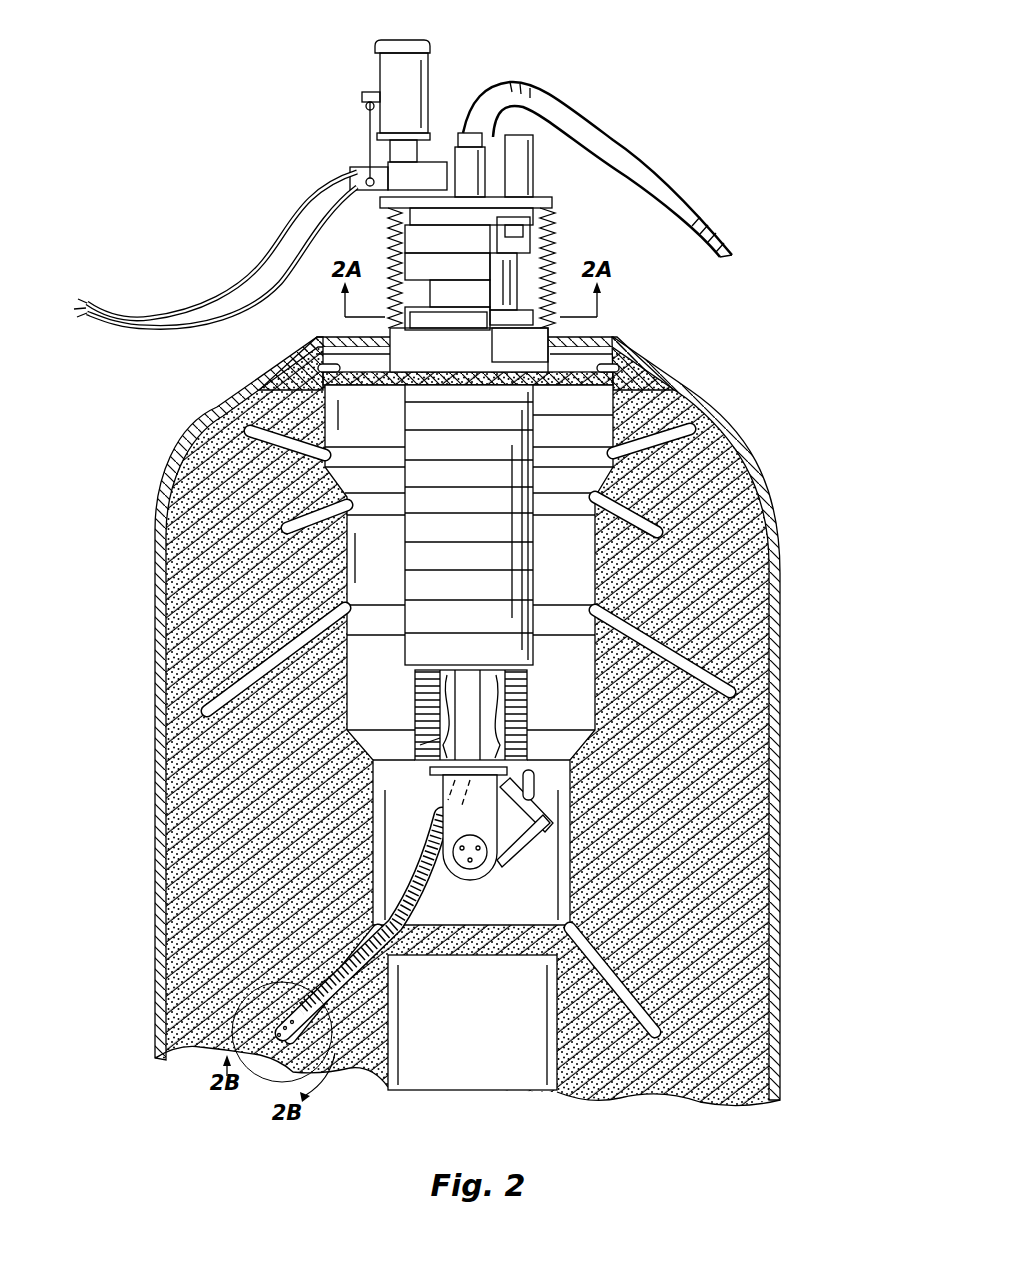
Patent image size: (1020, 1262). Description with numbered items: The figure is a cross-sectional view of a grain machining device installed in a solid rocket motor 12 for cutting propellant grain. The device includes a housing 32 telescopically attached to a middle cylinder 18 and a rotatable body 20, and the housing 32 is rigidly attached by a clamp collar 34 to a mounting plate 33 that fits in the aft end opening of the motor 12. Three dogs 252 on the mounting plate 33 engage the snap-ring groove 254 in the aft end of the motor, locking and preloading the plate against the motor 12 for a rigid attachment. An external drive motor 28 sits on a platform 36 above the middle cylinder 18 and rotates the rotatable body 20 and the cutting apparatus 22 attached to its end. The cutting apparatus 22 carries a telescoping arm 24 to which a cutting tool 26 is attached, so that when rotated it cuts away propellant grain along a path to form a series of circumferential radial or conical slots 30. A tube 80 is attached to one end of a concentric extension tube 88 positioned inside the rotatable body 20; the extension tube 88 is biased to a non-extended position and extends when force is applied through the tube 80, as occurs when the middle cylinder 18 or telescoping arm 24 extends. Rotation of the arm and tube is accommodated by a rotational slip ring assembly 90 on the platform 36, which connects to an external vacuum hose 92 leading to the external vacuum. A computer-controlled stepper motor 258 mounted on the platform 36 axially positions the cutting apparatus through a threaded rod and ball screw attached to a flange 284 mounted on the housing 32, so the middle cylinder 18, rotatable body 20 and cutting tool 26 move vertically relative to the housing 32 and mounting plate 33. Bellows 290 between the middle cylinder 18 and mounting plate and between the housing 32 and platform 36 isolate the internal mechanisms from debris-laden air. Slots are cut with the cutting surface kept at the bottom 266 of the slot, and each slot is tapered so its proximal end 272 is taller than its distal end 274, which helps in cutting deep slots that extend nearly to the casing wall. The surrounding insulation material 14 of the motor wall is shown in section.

The solid rocket motor 12 is at (780, 505).
The insulating wall 14 is at (182, 805).
The middle cylinder 18 is at (505, 713).
The rotatable body 20 is at (535, 792).
The cutting apparatus 22 is at (482, 887).
The telescoping arm 24 is at (308, 1005).
The cutting tool 26 is at (272, 1032).
The external drive motor 28 is at (410, 41).
The radial slots 30 is at (692, 436).
The housing 32 is at (480, 558).
The mounting plate 33 is at (568, 378).
The clamp collar 34 is at (540, 330).
The platform 36 is at (535, 200).
The tube 80 is at (403, 943).
The concentric extension tube 88 is at (468, 692).
The rotational slip ring assembly 90 is at (482, 107).
The external vacuum hose 92 is at (570, 115).
The dogs 252 is at (652, 370).
The snap-ring groove 254 is at (647, 390).
The stepper motor 258 is at (548, 165).
The bottom of the slot 266 is at (653, 1033).
The proximal end of the slot 272 is at (323, 617).
The distal end of the slot 274 is at (210, 690).
The flange 284 is at (540, 282).
The bellows 290 is at (320, 193).